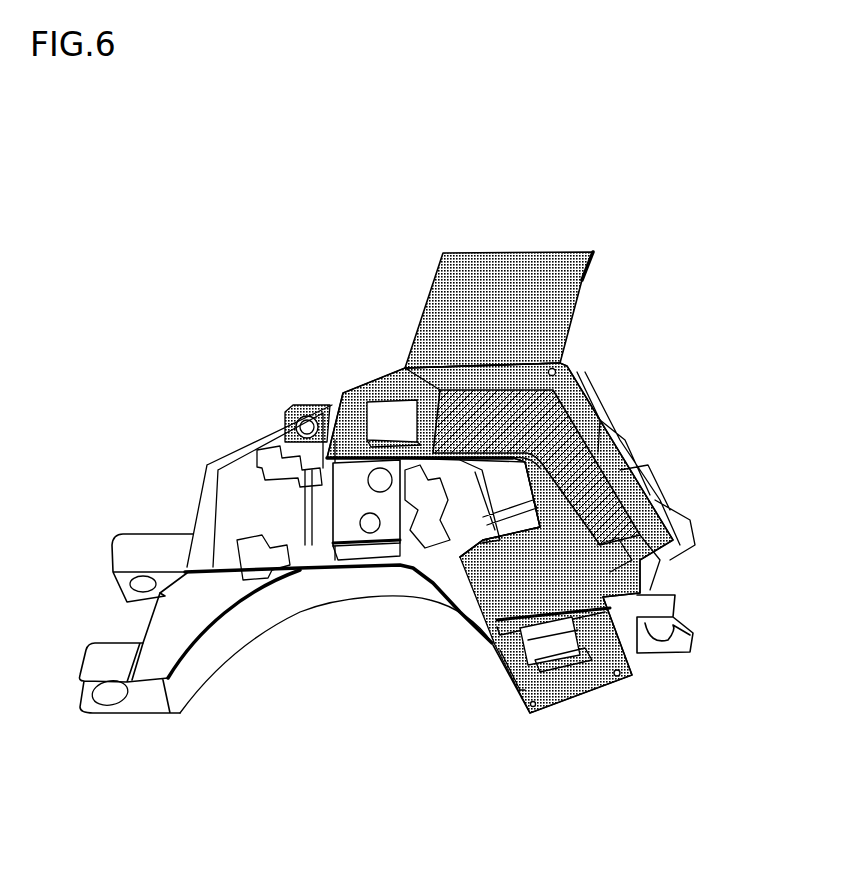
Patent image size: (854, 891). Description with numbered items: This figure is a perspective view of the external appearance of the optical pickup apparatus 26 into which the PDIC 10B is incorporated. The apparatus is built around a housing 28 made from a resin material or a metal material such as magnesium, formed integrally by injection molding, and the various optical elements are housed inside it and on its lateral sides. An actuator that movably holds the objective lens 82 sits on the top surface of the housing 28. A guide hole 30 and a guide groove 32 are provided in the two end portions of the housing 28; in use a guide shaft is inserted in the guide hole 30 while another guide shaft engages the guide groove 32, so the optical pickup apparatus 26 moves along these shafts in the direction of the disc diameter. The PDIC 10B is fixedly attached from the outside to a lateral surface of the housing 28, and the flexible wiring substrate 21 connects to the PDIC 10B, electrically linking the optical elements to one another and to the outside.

The flexible wiring substrate 21 is at (533, 277).
The optical pickup apparatus 26 is at (469, 512).
The housing 28 is at (195, 484).
The guide hole 30 is at (110, 692).
The guide groove 32 is at (663, 633).
The objective lens 82 is at (370, 533).
The PDIC 10B is at (560, 660).